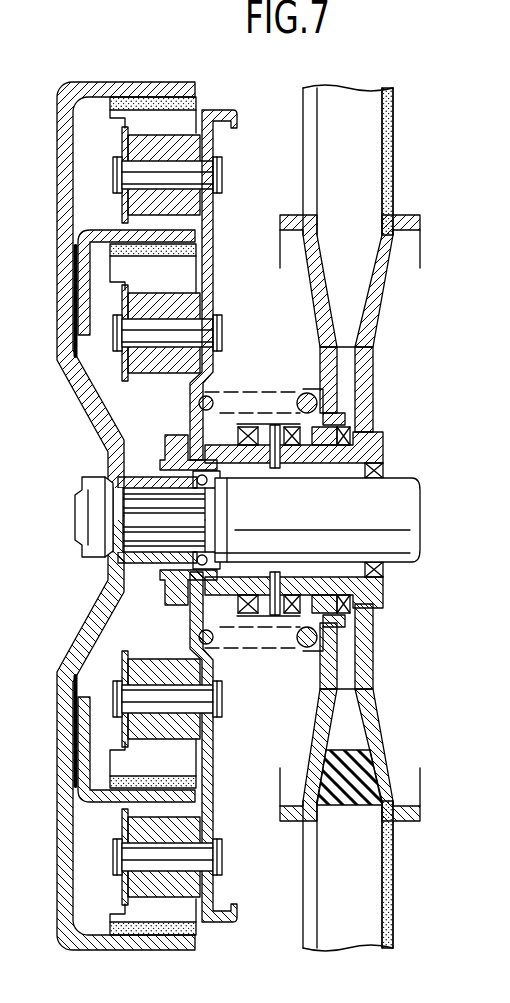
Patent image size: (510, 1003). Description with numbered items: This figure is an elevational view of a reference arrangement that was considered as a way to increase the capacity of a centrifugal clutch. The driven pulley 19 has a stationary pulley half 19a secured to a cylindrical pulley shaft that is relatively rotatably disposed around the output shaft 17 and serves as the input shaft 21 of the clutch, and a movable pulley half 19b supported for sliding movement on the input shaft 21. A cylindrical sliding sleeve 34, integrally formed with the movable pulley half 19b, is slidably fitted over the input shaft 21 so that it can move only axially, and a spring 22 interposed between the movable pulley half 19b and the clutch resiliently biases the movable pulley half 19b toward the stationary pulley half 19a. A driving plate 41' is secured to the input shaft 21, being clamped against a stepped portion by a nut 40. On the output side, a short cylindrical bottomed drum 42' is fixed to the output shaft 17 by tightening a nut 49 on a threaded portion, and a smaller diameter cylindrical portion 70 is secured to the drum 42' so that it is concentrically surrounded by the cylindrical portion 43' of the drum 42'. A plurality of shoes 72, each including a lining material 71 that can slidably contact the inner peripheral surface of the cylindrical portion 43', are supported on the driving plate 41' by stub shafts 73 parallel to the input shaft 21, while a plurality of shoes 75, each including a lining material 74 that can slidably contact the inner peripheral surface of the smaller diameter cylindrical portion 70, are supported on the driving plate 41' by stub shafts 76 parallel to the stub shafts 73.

The output shaft 17 is at (313, 535).
The driven pulley 19 is at (423, 307).
The stationary pulley half 19a is at (375, 322).
The movable pulley half 19b is at (357, 352).
The input shaft 21 is at (385, 450).
The spring 22 is at (285, 392).
The sliding sleeve 34 is at (353, 420).
The nut 40 is at (172, 436).
The driving plate 41' is at (219, 285).
The drum 42' is at (107, 733).
The cylindrical portion 43' is at (126, 280).
The nut 49 is at (83, 545).
The smaller diameter cylindrical portion 70 is at (95, 236).
The lining material 71 is at (175, 100).
The shoe 72 is at (122, 140).
The stub shaft 73 is at (222, 175).
The lining material 74 is at (197, 246).
The shoe 75 is at (190, 273).
The stub shaft 76 is at (222, 332).